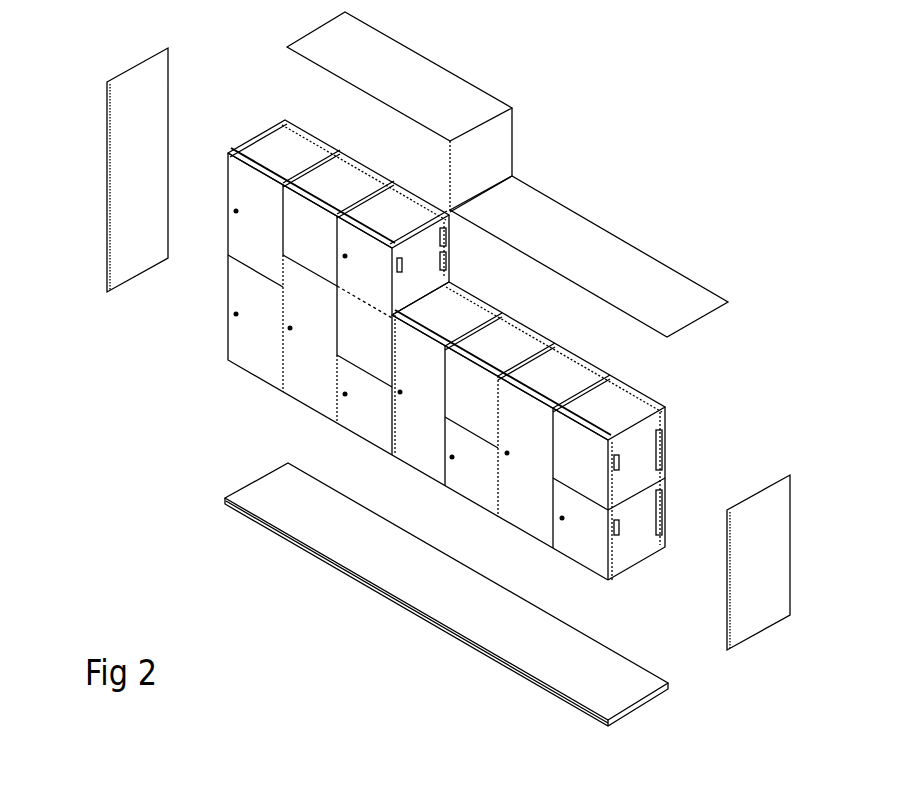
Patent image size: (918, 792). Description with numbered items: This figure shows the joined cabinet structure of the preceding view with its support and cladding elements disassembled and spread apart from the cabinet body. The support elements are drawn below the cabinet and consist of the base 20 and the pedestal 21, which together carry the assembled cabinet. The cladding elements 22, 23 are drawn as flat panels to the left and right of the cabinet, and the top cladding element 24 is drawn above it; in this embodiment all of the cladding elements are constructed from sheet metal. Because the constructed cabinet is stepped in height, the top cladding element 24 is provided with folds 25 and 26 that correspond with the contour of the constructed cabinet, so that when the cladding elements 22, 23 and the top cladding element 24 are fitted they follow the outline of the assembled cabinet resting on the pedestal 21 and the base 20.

The base 20 is at (245, 487).
The pedestal 21 is at (242, 518).
The cladding element 22 is at (107, 100).
The cladding element 23 is at (790, 492).
The top cladding element 24 is at (445, 67).
The fold 25 is at (488, 118).
The fold 26 is at (503, 182).